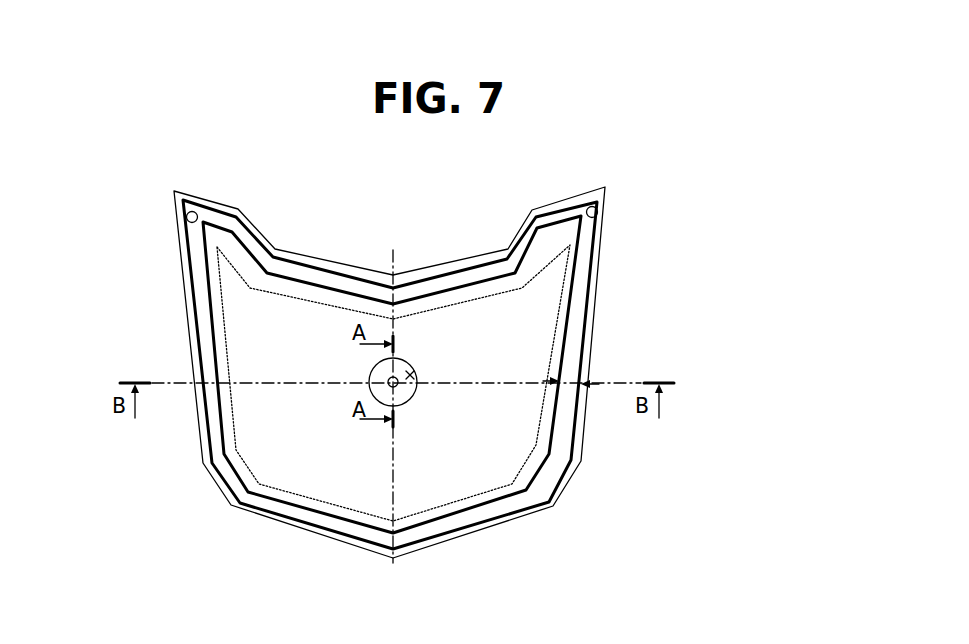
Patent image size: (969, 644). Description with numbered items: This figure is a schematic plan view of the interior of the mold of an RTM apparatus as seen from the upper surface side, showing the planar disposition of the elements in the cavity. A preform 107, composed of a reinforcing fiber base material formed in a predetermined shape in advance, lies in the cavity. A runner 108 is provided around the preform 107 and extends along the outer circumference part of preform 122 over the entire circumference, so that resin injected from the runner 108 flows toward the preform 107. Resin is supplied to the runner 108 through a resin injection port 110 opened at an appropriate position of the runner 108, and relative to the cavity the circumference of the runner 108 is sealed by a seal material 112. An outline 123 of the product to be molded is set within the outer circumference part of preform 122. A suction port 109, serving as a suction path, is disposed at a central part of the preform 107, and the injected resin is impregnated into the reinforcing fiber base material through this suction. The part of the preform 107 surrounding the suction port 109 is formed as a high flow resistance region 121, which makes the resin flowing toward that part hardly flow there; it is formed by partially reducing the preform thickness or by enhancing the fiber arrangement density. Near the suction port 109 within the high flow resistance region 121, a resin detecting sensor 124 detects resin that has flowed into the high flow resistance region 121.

The preform 107 is at (273, 428).
The runner 108 is at (575, 390).
The suction port 109 is at (398, 387).
The resin injection port 110 is at (198, 215).
The seal material 112 is at (596, 309).
The high flow resistance region 121 is at (384, 368).
The outer circumference part of preform 122 is at (497, 494).
The outline of product 123 is at (287, 493).
The resin detecting sensor 124 is at (414, 373).